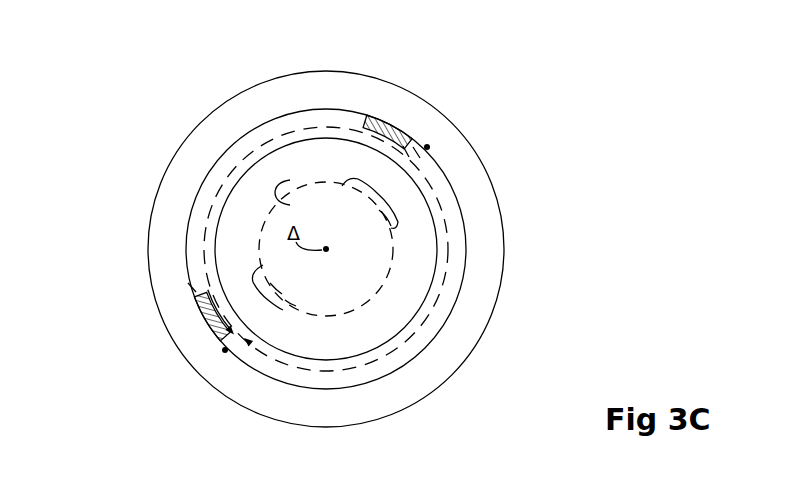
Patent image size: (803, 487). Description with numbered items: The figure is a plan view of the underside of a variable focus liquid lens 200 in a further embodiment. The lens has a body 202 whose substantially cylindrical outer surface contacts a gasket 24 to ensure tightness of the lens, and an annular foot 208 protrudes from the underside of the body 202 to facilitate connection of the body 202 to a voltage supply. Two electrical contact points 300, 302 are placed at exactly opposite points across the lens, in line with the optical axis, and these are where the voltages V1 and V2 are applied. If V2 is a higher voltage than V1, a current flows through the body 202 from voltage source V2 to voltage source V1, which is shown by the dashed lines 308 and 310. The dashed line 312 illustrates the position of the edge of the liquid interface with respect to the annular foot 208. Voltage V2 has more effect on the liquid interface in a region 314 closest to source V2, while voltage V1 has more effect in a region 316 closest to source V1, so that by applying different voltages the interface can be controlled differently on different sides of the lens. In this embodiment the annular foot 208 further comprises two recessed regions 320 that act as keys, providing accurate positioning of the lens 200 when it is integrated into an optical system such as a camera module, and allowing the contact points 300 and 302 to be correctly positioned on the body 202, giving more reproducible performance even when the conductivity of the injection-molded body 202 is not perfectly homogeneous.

The gasket 24 is at (507, 251).
The variable focus liquid lens 200 is at (560, 108).
The body 202 is at (450, 181).
The annular foot 208 is at (321, 104).
The electrical contact point 300 is at (228, 355).
The electrical contact point 302 is at (425, 146).
The dashed line (current flow) 308 is at (200, 281).
The dashed line (current flow) 310 is at (360, 369).
The dashed line (edge of liquid interface) 312 is at (300, 173).
The region closest to voltage source V2 314 is at (368, 186).
The region closest to voltage source V1 316 is at (305, 313).
The recessed regions (keys) 320 is at (206, 318).
The voltage V1 is at (225, 350).
The voltage V2 is at (427, 147).